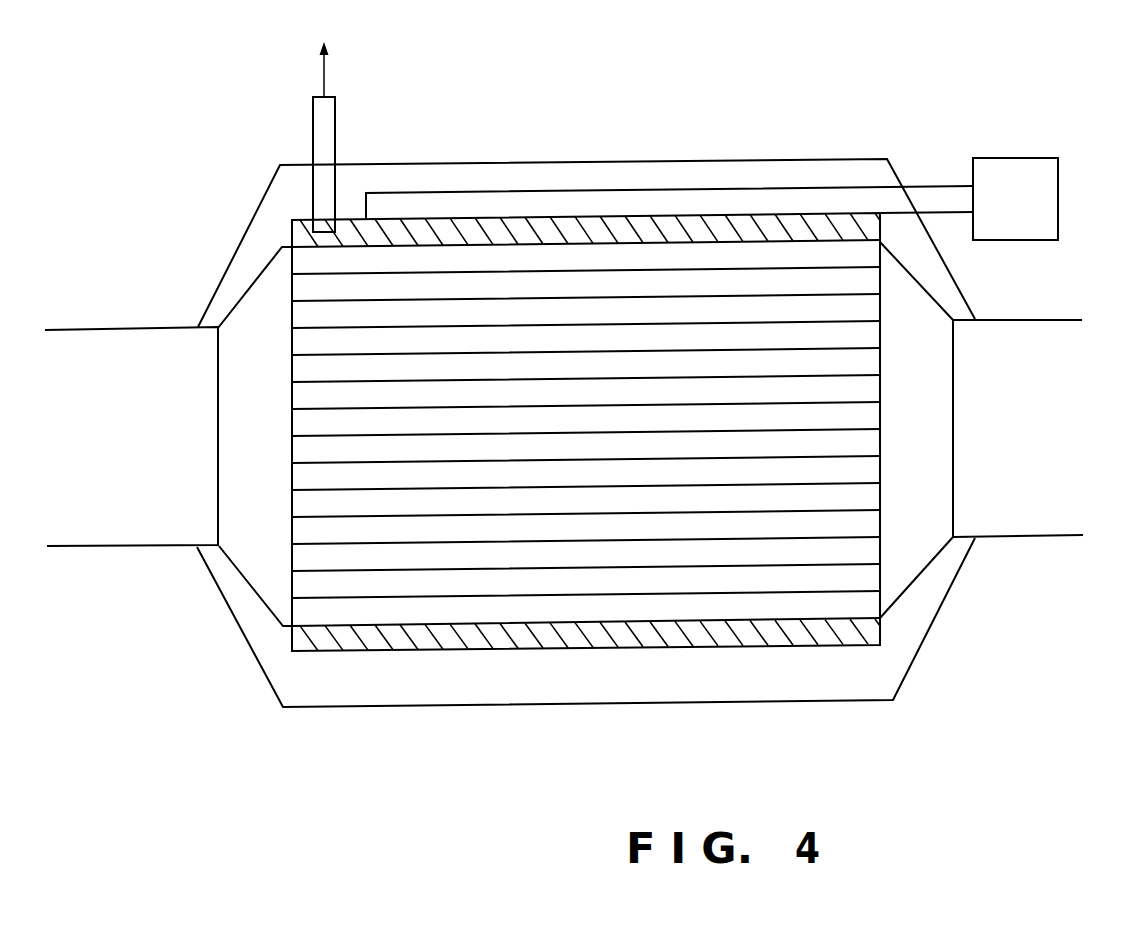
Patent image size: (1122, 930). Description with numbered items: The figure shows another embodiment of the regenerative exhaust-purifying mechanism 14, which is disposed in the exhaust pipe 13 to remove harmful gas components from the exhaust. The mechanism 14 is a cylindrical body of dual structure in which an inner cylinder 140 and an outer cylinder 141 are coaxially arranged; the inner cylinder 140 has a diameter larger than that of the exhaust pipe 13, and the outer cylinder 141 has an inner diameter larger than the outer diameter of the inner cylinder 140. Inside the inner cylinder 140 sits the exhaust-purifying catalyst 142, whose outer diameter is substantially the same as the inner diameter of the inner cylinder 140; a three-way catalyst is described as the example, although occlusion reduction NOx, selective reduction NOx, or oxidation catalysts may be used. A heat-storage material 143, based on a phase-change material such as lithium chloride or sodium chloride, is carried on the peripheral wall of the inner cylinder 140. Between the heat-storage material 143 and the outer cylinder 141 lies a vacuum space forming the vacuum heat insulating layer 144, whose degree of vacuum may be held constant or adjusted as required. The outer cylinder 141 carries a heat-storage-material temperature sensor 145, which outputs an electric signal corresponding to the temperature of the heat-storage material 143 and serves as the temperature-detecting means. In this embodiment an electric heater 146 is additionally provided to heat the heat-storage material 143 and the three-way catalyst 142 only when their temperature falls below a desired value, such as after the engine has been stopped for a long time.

The exhaust pipe 13 is at (108, 547).
The regenerative exhaust-purifying mechanism 14 is at (694, 137).
The inner cylinder 140 is at (922, 582).
The outer cylinder 141 is at (808, 702).
The exhaust-purifying catalyst 142 is at (865, 310).
The heat-storage material 143 is at (518, 223).
The vacuum heat insulating layer 144 is at (465, 690).
The heat-storage-material temperature sensor 145 is at (320, 120).
The electric heater 146 is at (1015, 163).